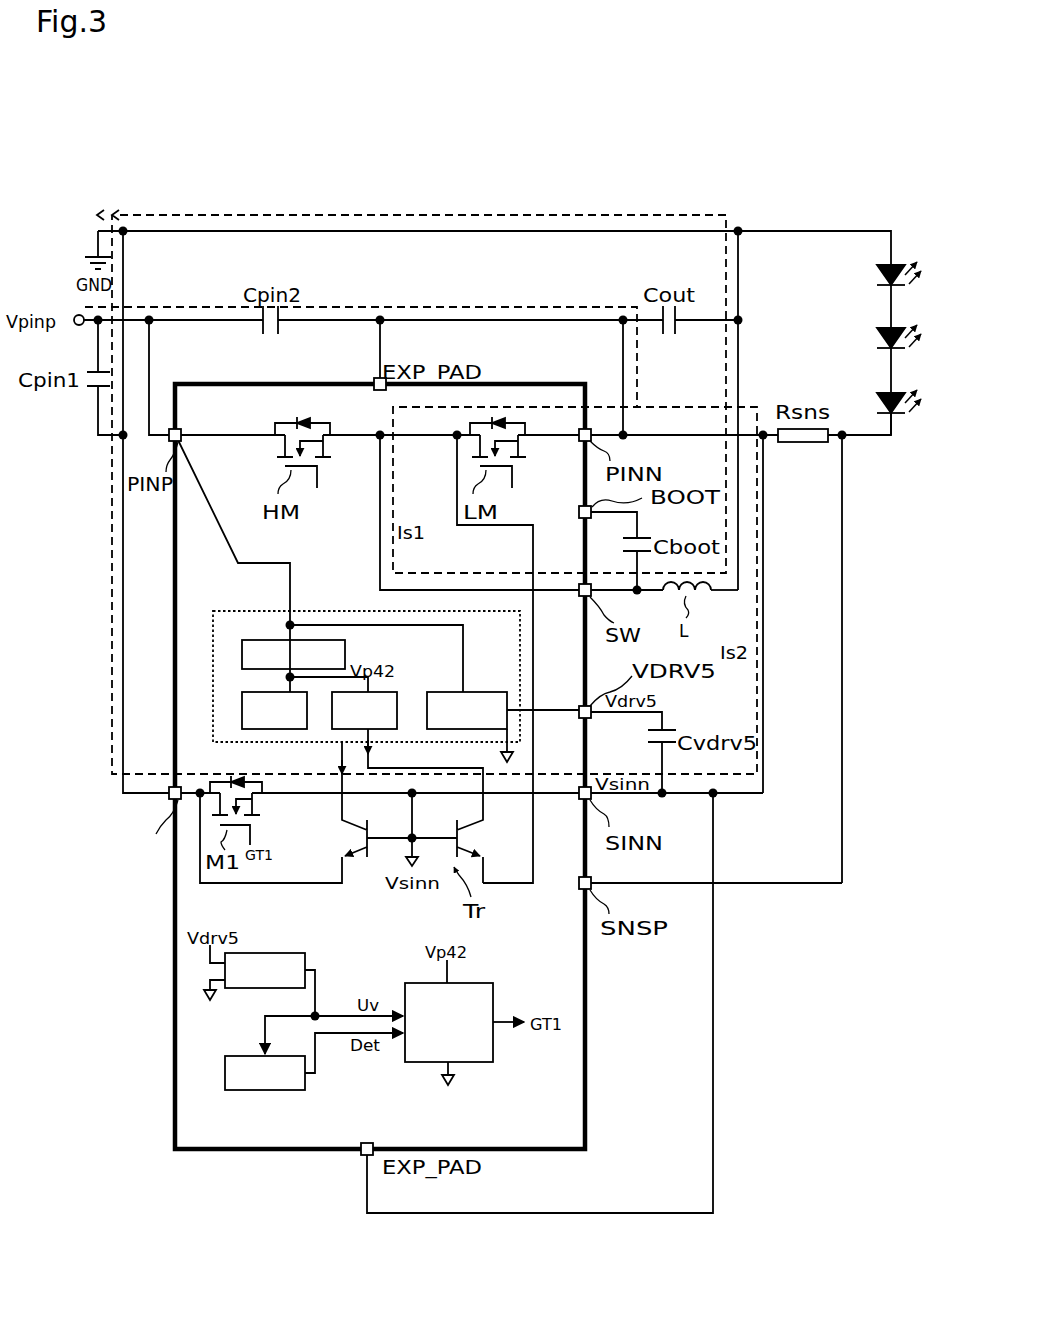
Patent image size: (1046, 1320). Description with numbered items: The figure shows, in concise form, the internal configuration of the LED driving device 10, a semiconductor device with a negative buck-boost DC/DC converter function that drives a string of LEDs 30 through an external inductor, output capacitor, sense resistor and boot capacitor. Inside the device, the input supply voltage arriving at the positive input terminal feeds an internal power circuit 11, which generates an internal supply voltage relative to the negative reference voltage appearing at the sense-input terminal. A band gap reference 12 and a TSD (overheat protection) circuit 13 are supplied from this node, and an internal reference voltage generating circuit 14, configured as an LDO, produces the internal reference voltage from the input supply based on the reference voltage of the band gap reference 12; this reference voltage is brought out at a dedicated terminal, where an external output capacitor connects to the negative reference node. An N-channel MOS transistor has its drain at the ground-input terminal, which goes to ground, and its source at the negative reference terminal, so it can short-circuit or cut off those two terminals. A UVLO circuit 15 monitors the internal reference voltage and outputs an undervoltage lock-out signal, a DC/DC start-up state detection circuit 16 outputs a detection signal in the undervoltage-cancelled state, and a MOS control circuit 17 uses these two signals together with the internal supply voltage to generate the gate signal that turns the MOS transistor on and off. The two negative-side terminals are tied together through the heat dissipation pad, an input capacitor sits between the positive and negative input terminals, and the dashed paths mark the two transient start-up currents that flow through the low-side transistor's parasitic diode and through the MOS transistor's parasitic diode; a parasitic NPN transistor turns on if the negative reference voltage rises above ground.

The LED driving device 10 is at (572, 383).
The internal power circuit 11 is at (244, 633).
The band gap reference 12 is at (386, 692).
The TSD (overheat protection) circuit 13 is at (244, 692).
The internal reference voltage generating circuit 14 is at (503, 688).
The UVLO circuit 15 is at (297, 952).
The DC/DC start-up state detection circuit 16 is at (290, 1056).
The MOS control circuit 17 is at (490, 983).
The LEDs 30 is at (886, 327).